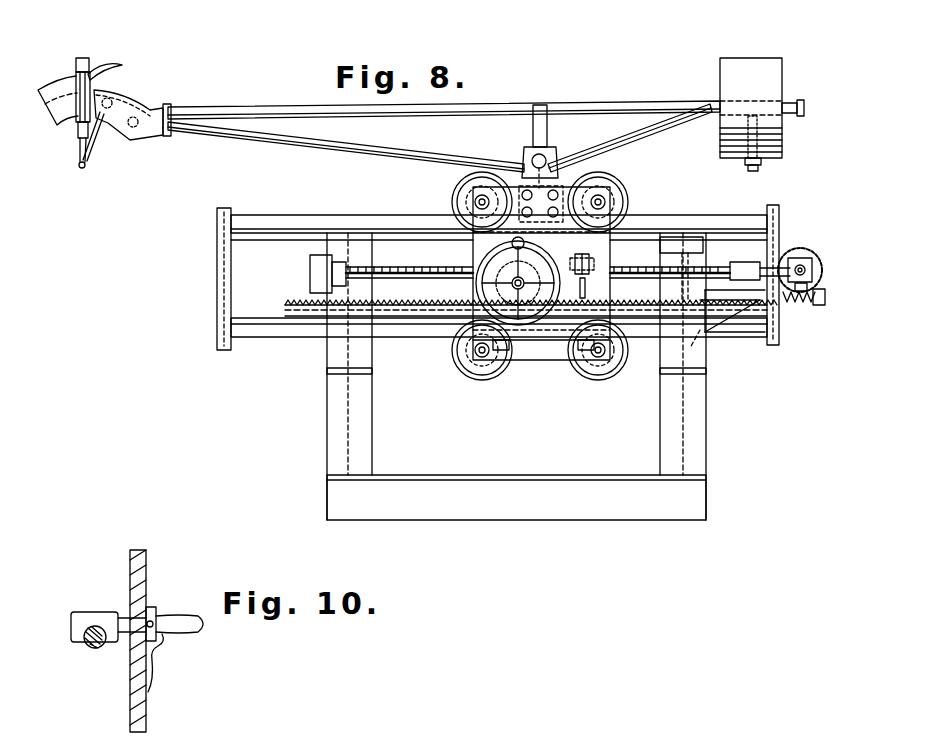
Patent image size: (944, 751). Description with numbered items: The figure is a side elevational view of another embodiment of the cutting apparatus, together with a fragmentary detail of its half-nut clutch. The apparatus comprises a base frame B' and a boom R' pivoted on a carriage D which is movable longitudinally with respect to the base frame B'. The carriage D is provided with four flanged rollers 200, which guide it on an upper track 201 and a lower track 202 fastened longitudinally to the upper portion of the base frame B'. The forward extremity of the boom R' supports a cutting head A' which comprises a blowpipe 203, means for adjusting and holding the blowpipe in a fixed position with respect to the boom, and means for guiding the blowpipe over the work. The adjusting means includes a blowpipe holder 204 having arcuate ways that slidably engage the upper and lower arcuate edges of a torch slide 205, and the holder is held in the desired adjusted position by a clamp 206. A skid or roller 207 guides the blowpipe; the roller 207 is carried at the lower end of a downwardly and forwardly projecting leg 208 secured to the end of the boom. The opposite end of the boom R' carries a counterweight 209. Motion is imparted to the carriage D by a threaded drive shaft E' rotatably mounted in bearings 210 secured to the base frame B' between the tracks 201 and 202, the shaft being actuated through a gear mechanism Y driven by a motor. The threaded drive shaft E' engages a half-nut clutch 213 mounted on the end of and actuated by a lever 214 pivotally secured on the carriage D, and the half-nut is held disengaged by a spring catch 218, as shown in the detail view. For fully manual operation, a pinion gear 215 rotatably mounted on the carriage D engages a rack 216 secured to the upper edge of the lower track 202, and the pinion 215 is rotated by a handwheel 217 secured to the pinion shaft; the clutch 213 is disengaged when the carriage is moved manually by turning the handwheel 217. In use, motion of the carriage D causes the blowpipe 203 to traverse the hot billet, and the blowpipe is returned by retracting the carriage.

In FIG. 8, the flanged rollers 200 is at (462, 190).
In FIG. 8, the upper track 201 is at (280, 228).
In FIG. 8, the lower track 202 is at (265, 335).
In FIG. 8, the blowpipe 203 is at (85, 58).
In FIG. 8, the blowpipe holder 204 is at (48, 97).
In FIG. 8, the torch slide 205 is at (128, 90).
In FIG. 8, the clamp 206 is at (108, 66).
In FIG. 8, the roller 207 is at (86, 168).
In FIG. 8, the leg 208 is at (98, 140).
In FIG. 8, the counterweight 209 is at (732, 78).
In FIG. 8, the bearings 210 is at (320, 273).
In FIG. 10, the half-nut clutch 213 is at (100, 618).
In FIG. 8, the lever 214 is at (590, 262).
In FIG. 10, the lever 214 is at (186, 630).
In FIG. 8, the pinion gear 215 is at (476, 290).
In FIG. 8, the rack 216 is at (408, 318).
In FIG. 8, the handwheel 217 is at (480, 258).
In FIG. 8, the spring catch 218 is at (588, 290).
In FIG. 10, the spring catch 218 is at (152, 672).
In FIG. 8, the cutting head A' is at (52, 177).
In FIG. 8, the base frame B' is at (516, 376).
In FIG. 8, the carriage D is at (528, 360).
In FIG. 10, the carriage D is at (136, 706).
In FIG. 8, the threaded drive shaft E' is at (389, 261).
In FIG. 10, the threaded drive shaft E' is at (82, 652).
In FIG. 8, the boom R' is at (441, 135).
In FIG. 8, the gear mechanism Y is at (803, 258).